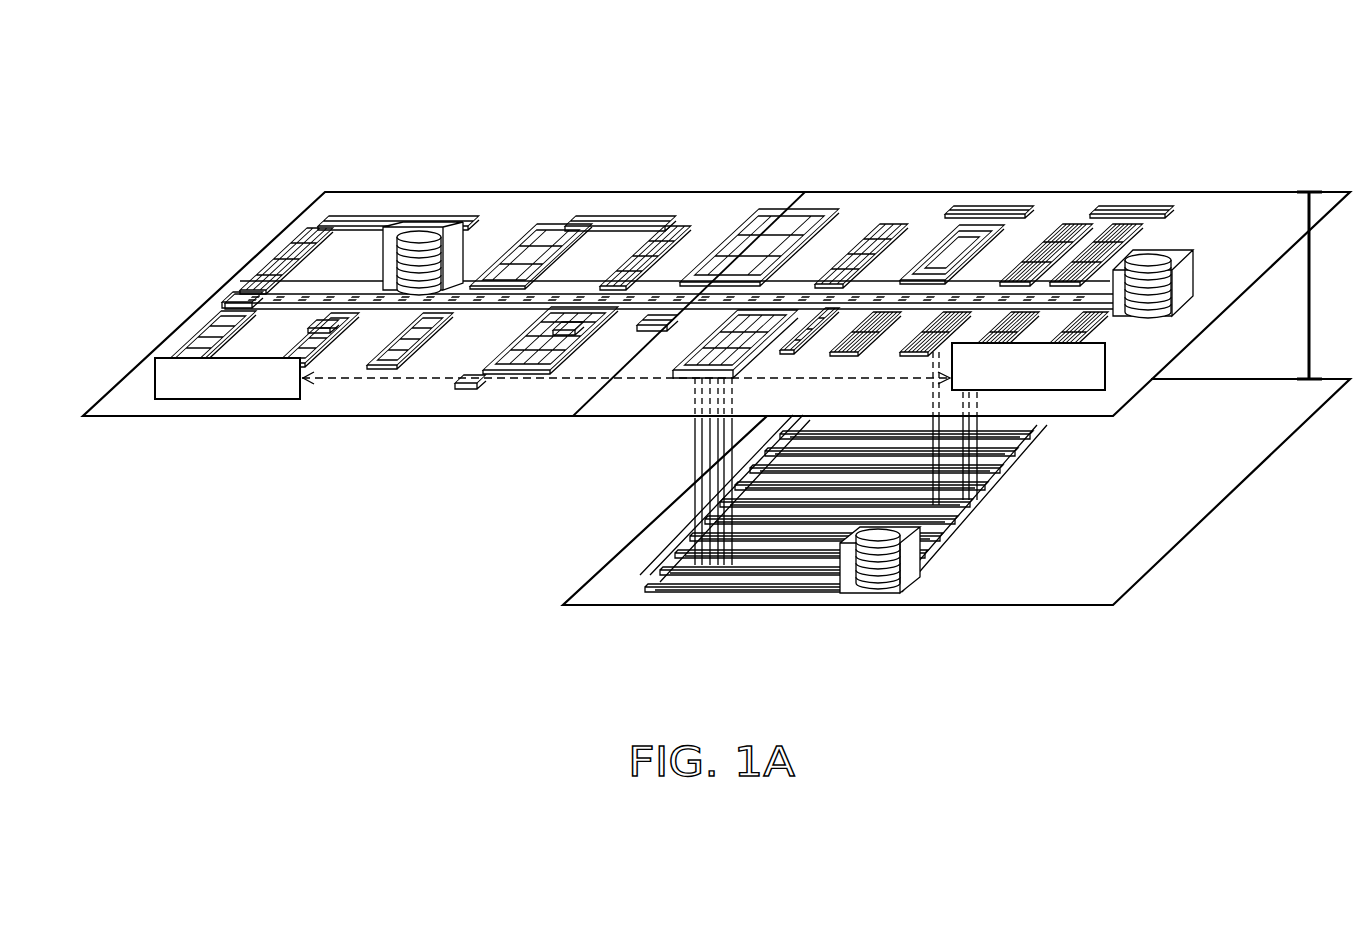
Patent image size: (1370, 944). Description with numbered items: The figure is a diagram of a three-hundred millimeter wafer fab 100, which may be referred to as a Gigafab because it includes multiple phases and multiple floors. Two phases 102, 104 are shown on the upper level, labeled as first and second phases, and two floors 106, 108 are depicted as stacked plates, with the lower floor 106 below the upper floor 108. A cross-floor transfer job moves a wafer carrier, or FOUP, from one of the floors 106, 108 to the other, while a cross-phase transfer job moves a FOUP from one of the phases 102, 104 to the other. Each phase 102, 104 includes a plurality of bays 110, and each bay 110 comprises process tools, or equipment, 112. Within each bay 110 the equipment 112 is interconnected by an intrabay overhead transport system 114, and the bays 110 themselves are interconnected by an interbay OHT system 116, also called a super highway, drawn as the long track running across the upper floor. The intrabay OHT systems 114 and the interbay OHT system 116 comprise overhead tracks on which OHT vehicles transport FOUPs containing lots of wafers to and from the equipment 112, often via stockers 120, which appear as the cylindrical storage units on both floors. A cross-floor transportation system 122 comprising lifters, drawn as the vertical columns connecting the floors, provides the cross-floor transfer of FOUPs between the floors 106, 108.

The wafer fab 100 is at (256, 111).
The phase 102 is at (1350, 110).
The phase 104 is at (565, 422).
The floor 106 is at (1367, 375).
The floor 108 is at (1123, 424).
The bay 110 is at (627, 215).
The process tool 112 is at (394, 198).
The intrabay overhead transport system 114 is at (568, 201).
The interbay OHT system 116 is at (232, 285).
The stocker 120 is at (428, 201).
The cross-floor transportation system 122 is at (689, 378).